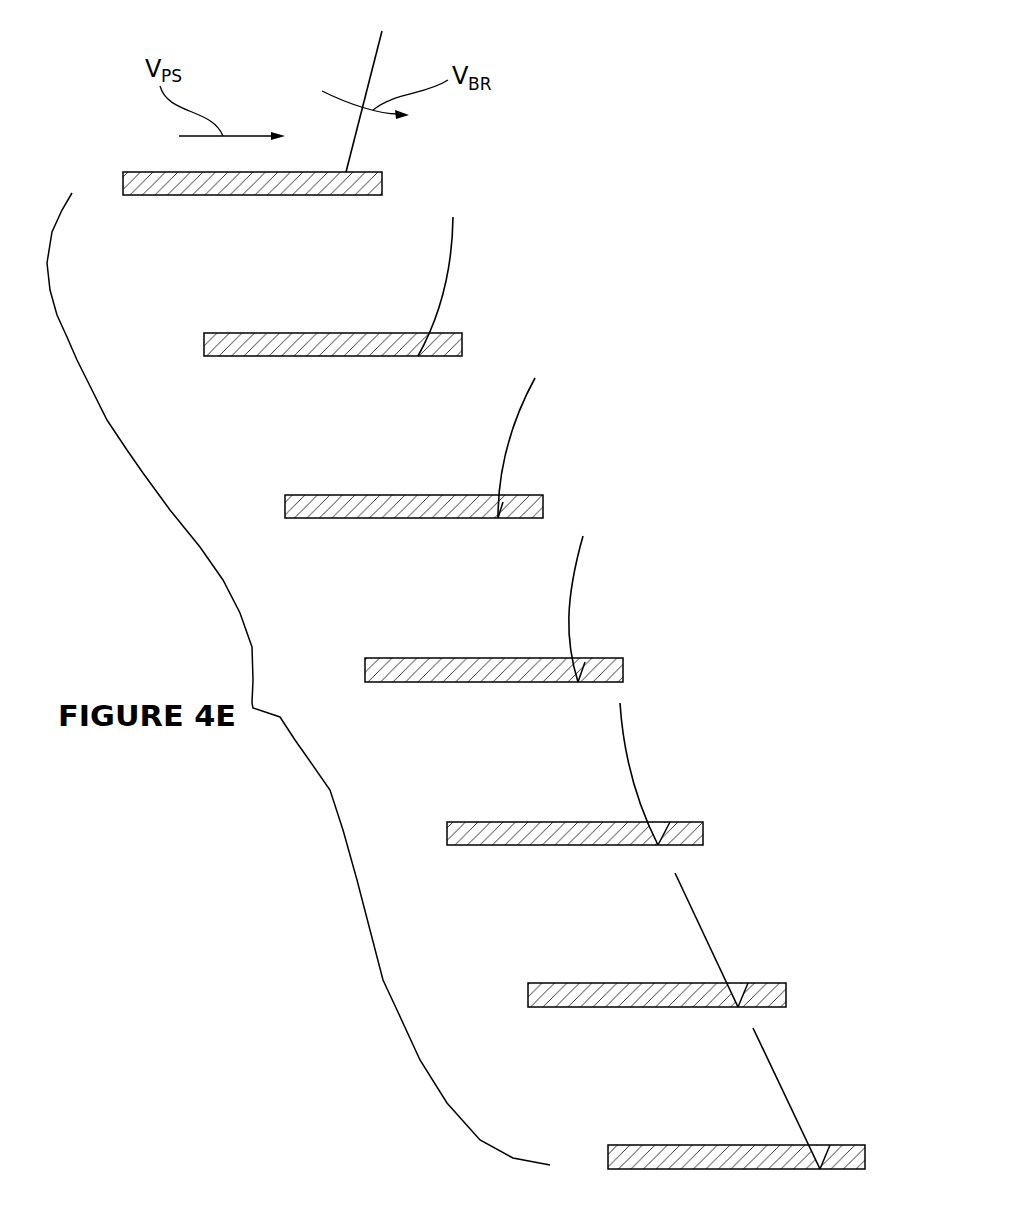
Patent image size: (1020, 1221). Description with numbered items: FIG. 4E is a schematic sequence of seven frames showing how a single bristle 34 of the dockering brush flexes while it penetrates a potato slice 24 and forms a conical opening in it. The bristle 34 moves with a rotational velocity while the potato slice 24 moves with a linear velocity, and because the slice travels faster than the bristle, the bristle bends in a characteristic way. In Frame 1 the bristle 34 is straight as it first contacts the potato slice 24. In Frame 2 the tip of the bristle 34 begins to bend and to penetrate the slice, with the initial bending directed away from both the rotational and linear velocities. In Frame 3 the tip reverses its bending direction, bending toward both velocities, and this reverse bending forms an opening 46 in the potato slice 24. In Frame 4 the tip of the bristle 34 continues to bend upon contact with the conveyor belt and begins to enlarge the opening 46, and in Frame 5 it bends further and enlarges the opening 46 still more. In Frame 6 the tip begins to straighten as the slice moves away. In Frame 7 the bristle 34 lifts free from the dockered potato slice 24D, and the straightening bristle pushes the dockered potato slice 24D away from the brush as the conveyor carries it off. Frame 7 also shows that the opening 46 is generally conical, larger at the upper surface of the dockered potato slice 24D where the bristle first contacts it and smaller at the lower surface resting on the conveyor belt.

The potato slice 24 is at (148, 170).
The dockered potato slice 24D is at (632, 1143).
The bristle 34 is at (372, 70).
The opening 46 is at (508, 493).
The Frame 1 is at (223, 144).
The Frame 2 is at (316, 344).
The Frame 3 is at (397, 508).
The Frame 4 is at (478, 668).
The Frame 5 is at (558, 831).
The Frame 6 is at (639, 994).
The Frame 7 is at (706, 1116).